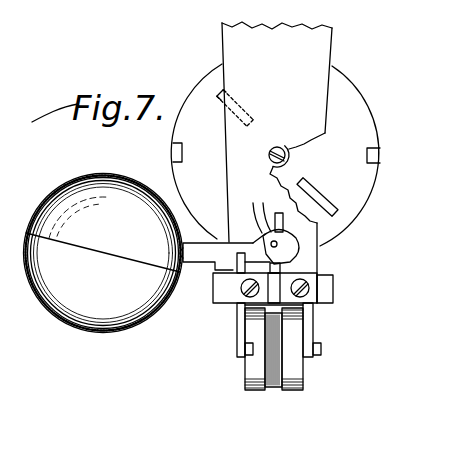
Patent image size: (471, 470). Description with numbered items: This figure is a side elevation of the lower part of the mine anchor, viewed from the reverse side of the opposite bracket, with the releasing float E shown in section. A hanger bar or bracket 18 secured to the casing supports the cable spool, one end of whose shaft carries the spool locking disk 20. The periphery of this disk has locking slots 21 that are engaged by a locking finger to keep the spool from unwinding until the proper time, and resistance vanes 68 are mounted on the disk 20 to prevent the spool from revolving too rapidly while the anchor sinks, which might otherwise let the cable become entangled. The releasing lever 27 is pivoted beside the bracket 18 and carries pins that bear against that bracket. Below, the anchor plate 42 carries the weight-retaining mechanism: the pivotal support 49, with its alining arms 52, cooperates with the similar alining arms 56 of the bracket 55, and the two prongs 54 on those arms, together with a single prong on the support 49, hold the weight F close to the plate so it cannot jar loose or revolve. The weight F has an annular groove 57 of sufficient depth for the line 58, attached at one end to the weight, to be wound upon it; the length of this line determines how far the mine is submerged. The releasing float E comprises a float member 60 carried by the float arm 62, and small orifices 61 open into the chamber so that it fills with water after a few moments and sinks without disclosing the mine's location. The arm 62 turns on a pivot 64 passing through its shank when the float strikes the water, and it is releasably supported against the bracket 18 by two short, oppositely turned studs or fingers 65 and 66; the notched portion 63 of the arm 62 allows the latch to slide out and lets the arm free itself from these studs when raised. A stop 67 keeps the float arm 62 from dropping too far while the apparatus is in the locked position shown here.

The hanger bar or bracket 18 is at (320, 50).
The spool locking disk 20 is at (343, 95).
The locking slot 21 is at (389, 155).
The releasing lever 27 is at (173, 152).
The anchor plate 42 is at (325, 293).
The pivotal support 49 is at (307, 325).
The alining arm 52 is at (313, 352).
The prong 54 is at (313, 357).
The bracket 55 is at (237, 327).
The alining arm 56 is at (237, 350).
The annular groove 57 is at (280, 383).
The line 58 is at (307, 305).
The float member 60 is at (118, 328).
The orifice 61 is at (103, 252).
The float arm 62 is at (292, 255).
The notched portion 63 is at (255, 206).
The pivot 64 is at (292, 246).
The stud or finger 65 is at (317, 223).
The stud or finger 66 is at (320, 273).
The stop 67 is at (236, 280).
The resistance vane 68 is at (219, 97).
The releasing float E is at (124, 222).
The weight F is at (302, 392).